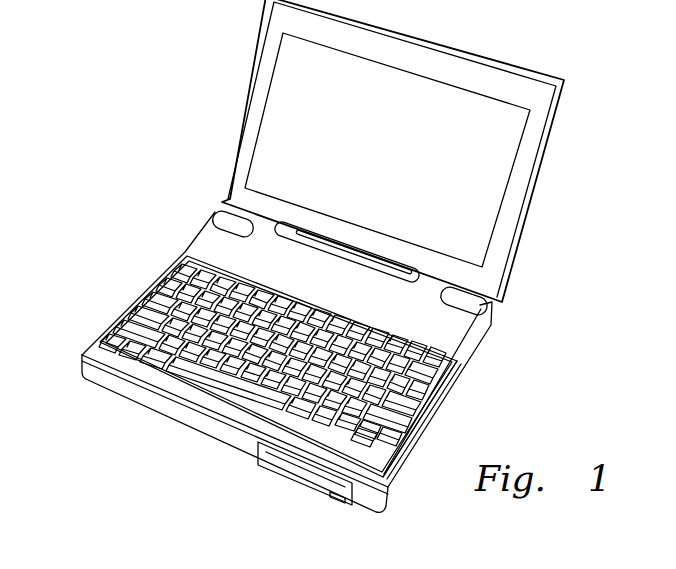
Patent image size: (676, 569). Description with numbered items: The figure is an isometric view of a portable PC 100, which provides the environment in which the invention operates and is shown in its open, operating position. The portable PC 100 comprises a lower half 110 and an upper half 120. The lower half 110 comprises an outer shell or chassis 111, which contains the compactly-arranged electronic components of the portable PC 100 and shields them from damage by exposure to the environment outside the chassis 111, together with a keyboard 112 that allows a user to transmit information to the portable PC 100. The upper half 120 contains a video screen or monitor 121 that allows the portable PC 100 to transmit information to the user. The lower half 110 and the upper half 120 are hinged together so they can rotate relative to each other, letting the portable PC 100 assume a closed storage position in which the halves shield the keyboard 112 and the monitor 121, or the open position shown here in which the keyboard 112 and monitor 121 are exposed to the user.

The portable PC 100 is at (96, 150).
The lower half 110 is at (206, 244).
The outer shell or chassis 111 is at (452, 340).
The keyboard 112 is at (153, 304).
The upper half 120 is at (500, 88).
The video screen or monitor 121 is at (400, 159).